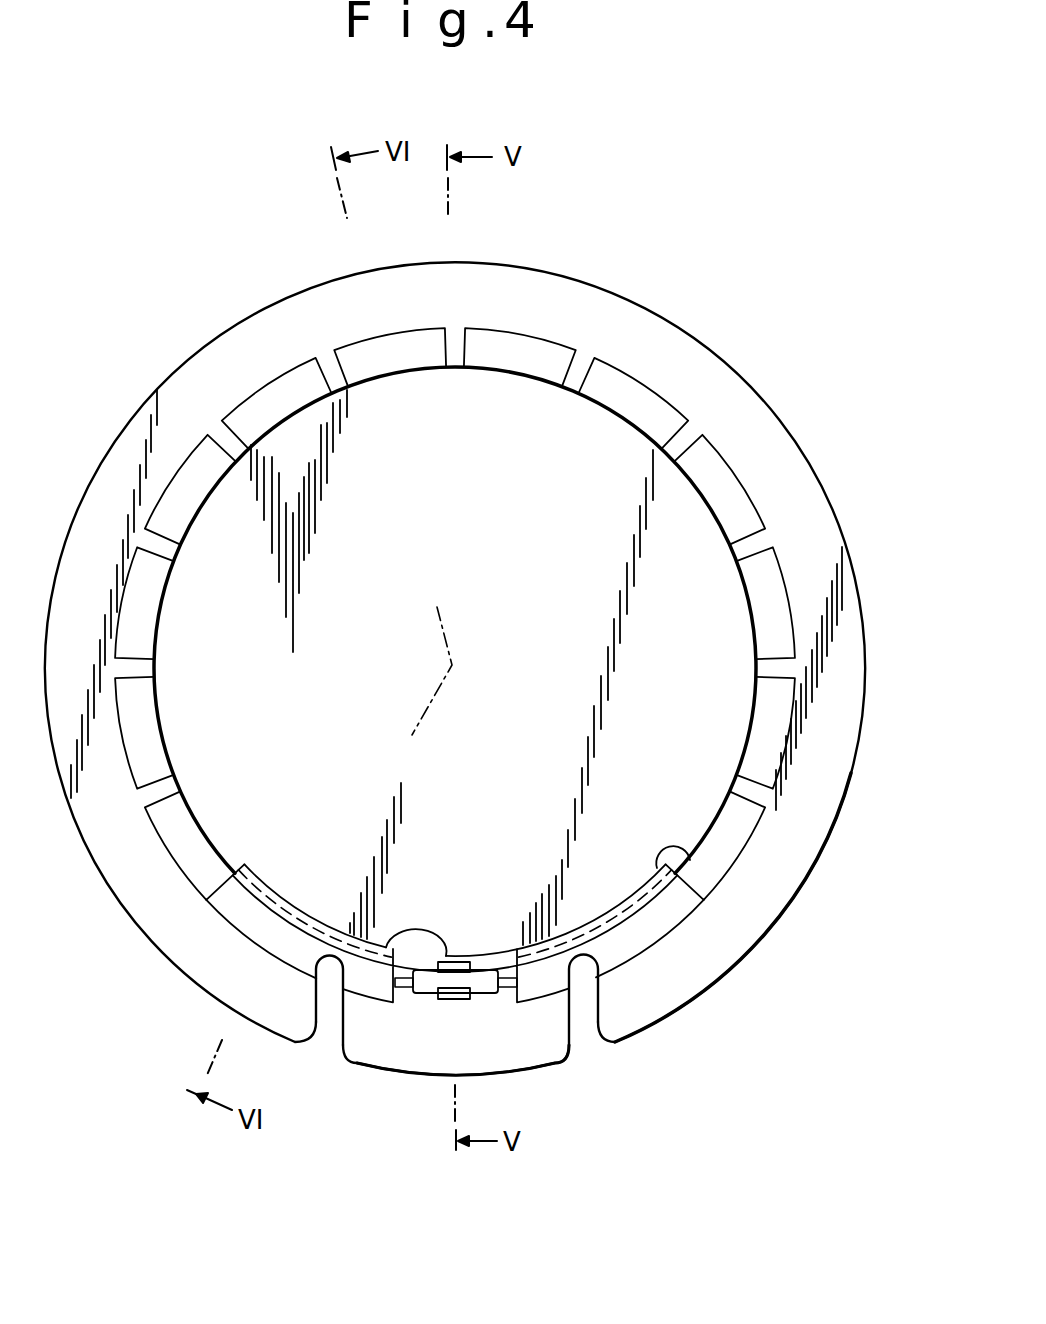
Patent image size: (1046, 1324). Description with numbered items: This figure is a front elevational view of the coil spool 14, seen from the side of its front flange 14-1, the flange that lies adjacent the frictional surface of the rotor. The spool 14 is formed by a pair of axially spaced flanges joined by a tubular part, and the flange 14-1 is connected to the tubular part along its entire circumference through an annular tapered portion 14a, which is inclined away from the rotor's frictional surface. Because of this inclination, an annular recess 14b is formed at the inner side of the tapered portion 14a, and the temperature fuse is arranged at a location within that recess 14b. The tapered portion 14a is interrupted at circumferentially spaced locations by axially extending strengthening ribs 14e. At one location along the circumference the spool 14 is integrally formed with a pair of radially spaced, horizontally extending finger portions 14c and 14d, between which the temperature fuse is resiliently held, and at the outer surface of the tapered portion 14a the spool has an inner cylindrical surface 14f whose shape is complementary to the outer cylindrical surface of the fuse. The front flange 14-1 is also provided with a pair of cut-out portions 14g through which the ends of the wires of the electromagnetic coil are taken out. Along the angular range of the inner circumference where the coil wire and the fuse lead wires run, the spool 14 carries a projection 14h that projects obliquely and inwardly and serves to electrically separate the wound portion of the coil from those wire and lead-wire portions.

The coil spool 14 is at (722, 341).
The flange 14-1 is at (732, 936).
The annular tapered portion 14a is at (743, 818).
The annular recess 14b is at (447, 1000).
The finger portion 14c is at (387, 950).
The finger portion 14d is at (463, 1000).
The strengthening rib 14e is at (698, 438).
The inner cylindrical surface 14f is at (428, 990).
The cut-out portion 14g is at (332, 1004).
The projection 14h is at (697, 858).